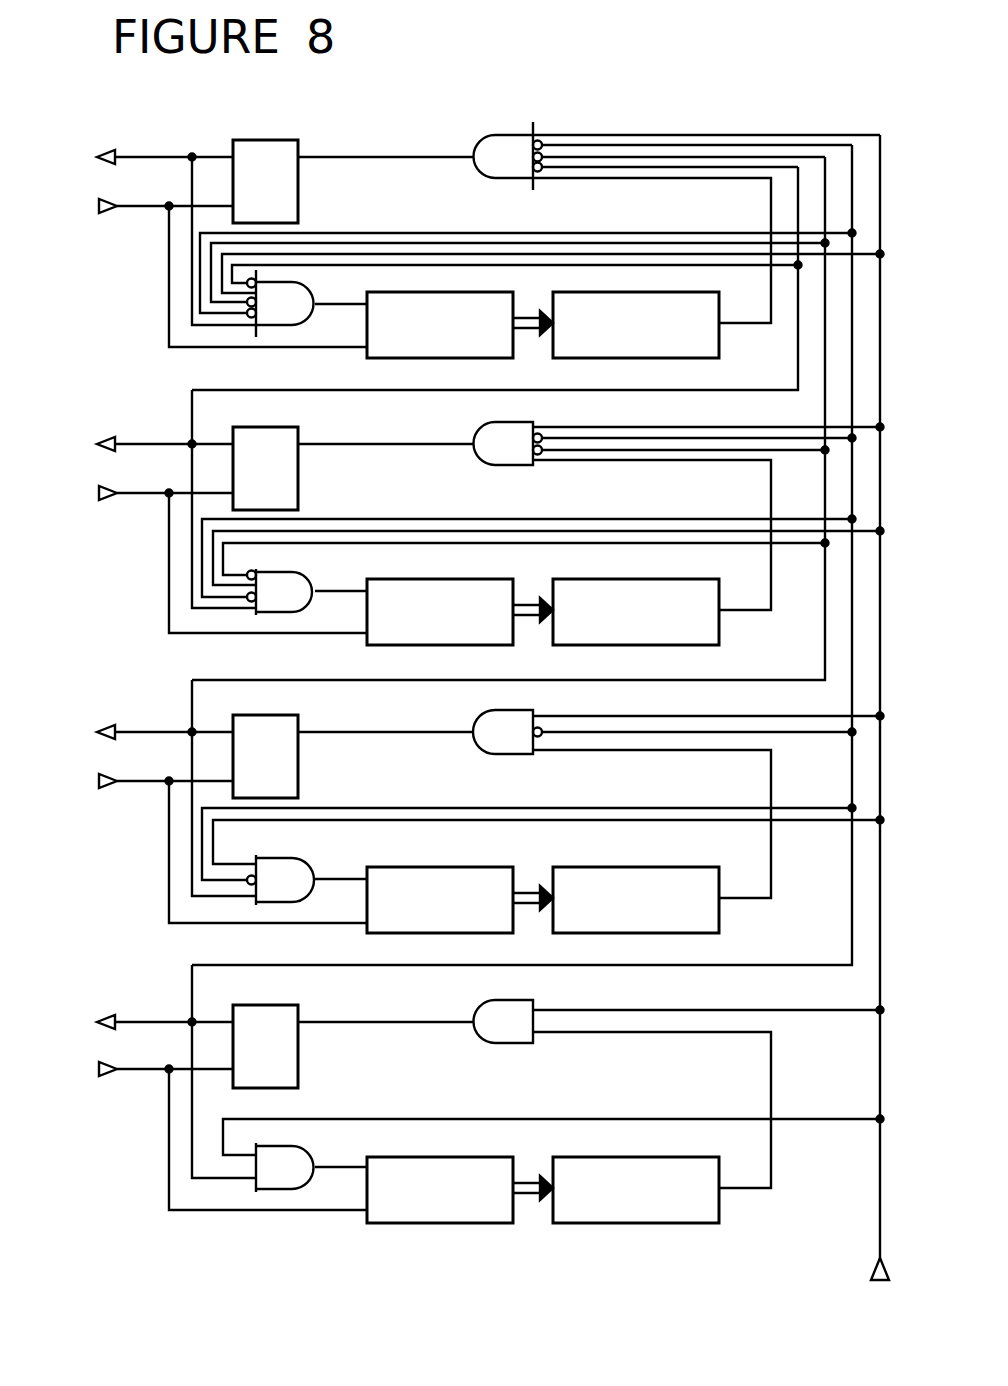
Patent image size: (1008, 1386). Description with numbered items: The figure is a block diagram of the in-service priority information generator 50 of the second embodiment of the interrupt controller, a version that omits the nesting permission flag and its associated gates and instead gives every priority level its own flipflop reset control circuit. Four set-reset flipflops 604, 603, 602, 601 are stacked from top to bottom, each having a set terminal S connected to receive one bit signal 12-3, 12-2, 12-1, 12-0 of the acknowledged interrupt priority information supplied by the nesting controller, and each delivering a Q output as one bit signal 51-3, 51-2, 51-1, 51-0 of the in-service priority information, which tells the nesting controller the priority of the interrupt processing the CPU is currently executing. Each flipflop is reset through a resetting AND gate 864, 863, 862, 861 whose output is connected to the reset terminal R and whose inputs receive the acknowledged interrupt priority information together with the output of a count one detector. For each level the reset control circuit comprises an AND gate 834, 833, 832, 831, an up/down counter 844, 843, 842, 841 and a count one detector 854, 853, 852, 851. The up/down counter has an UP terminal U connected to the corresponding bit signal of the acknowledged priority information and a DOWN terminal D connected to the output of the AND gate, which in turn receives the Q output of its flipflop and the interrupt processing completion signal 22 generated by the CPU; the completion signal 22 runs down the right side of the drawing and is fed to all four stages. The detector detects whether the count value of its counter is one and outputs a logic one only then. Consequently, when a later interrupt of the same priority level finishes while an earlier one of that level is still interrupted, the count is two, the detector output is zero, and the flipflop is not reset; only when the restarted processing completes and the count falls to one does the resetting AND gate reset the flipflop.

The in-service priority information generator 50 is at (853, 89).
The interrupt processing completion signal 22 is at (862, 712).
The bit signal of in-service priority information 51-3 is at (132, 158).
The bit signal of in-service priority information 51-2 is at (132, 445).
The bit signal of in-service priority information 51-1 is at (132, 733).
The bit signal of in-service priority information 51-0 is at (132, 1023).
The bit signal of acknowledged interrupt priority information 12-3 is at (132, 207).
The bit signal of acknowledged interrupt priority information 12-2 is at (132, 494).
The bit signal of acknowledged interrupt priority information 12-1 is at (132, 782).
The bit signal of acknowledged interrupt priority information 12-0 is at (132, 1070).
The set-reset flipflop 604 is at (298, 213).
The set-reset flipflop 603 is at (306, 470).
The set-reset flipflop 602 is at (306, 758).
The set-reset flipflop 601 is at (306, 1048).
The AND gate 864 is at (492, 178).
The AND gate 863 is at (484, 462).
The AND gate 862 is at (484, 750).
The AND gate 861 is at (480, 1040).
The AND gate 834 is at (313, 318).
The AND gate 833 is at (304, 602).
The AND gate 832 is at (304, 889).
The AND gate 831 is at (309, 1178).
The up/down counter 844 is at (462, 358).
The up/down counter 843 is at (425, 619).
The up/down counter 842 is at (425, 907).
The up/down counter 841 is at (425, 1197).
The count "1" detector 854 is at (650, 358).
The count "1" detector 853 is at (636, 627).
The count "1" detector 852 is at (636, 915).
The count "1" detector 851 is at (636, 1205).